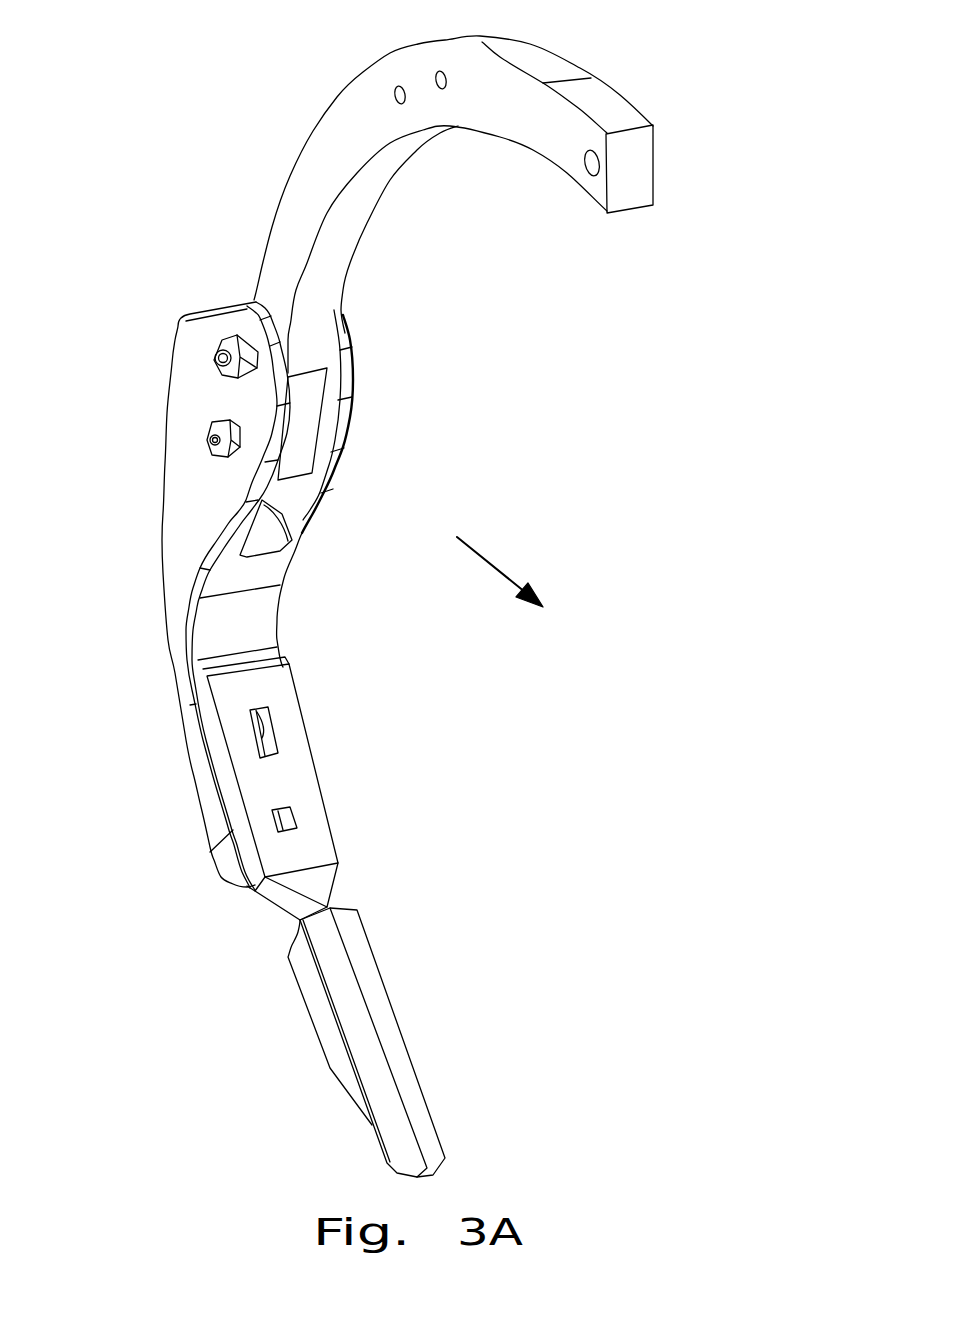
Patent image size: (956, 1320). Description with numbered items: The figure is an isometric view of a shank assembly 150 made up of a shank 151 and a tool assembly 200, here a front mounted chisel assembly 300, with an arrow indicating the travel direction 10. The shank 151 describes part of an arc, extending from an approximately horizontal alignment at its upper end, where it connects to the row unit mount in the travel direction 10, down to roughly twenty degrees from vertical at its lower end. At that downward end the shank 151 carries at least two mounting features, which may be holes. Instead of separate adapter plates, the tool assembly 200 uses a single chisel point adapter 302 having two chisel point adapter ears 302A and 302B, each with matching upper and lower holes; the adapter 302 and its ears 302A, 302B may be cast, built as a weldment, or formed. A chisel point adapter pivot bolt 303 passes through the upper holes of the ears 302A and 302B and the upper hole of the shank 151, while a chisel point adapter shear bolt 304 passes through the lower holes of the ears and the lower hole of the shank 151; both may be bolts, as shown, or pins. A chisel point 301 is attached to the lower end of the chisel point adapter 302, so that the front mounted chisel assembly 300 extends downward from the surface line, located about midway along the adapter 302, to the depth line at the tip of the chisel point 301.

The travel direction 10 is at (498, 565).
The shank assembly 150 is at (543, 167).
The shank 151 is at (553, 50).
The tool assembly 200 is at (283, 600).
The front mounted chisel assembly 300 is at (313, 775).
The chisel point 301 is at (410, 1062).
The chisel point adapter 302 is at (160, 572).
The chisel point adapter ear 302A is at (250, 301).
The chisel point adapter ear 302B is at (347, 352).
The chisel point adapter pivot bolt 303 is at (220, 358).
The chisel point adapter shear bolt 304 is at (207, 442).